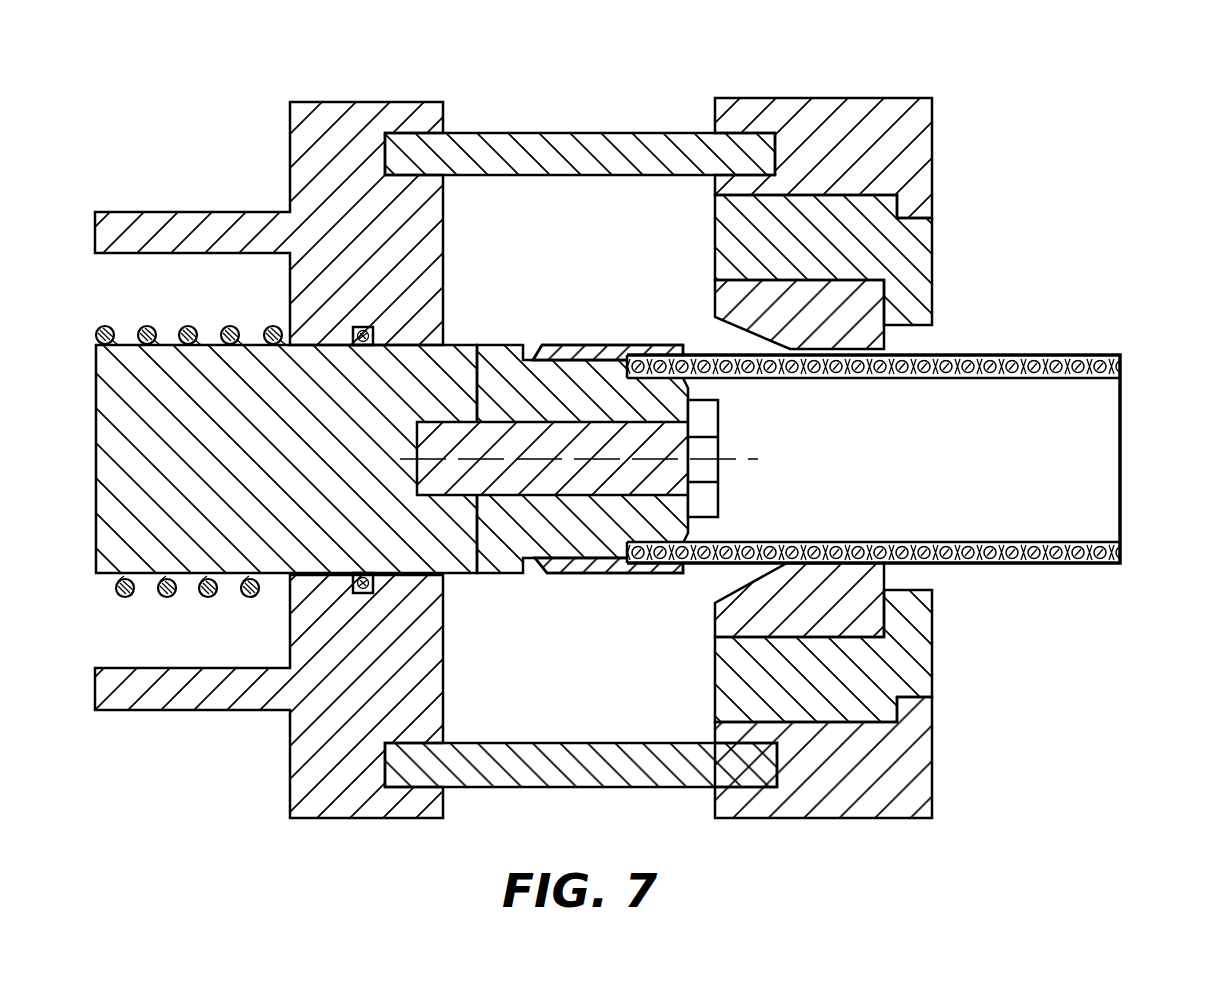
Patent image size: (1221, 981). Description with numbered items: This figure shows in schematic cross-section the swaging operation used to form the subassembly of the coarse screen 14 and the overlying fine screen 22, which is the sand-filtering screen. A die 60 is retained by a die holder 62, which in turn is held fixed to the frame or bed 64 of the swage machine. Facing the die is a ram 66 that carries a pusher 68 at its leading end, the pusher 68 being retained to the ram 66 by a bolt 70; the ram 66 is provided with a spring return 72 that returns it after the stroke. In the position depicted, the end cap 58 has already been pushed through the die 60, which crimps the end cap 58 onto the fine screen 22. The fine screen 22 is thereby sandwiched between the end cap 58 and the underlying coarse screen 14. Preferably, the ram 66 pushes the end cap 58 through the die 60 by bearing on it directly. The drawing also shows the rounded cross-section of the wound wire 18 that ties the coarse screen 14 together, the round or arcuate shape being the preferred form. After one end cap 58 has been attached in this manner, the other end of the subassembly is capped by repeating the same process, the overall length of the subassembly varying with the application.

The coarse screen 14 is at (1072, 382).
The wound wire 18 is at (1060, 537).
The fine screen 22 is at (1035, 355).
The end cap 58 is at (575, 355).
The die 60 is at (725, 313).
The die holder 62 is at (923, 258).
The frame or bed 64 is at (756, 94).
The ram 66 is at (292, 463).
The pusher 68 is at (500, 353).
The bolt 70 is at (527, 483).
The spring return 72 is at (145, 327).